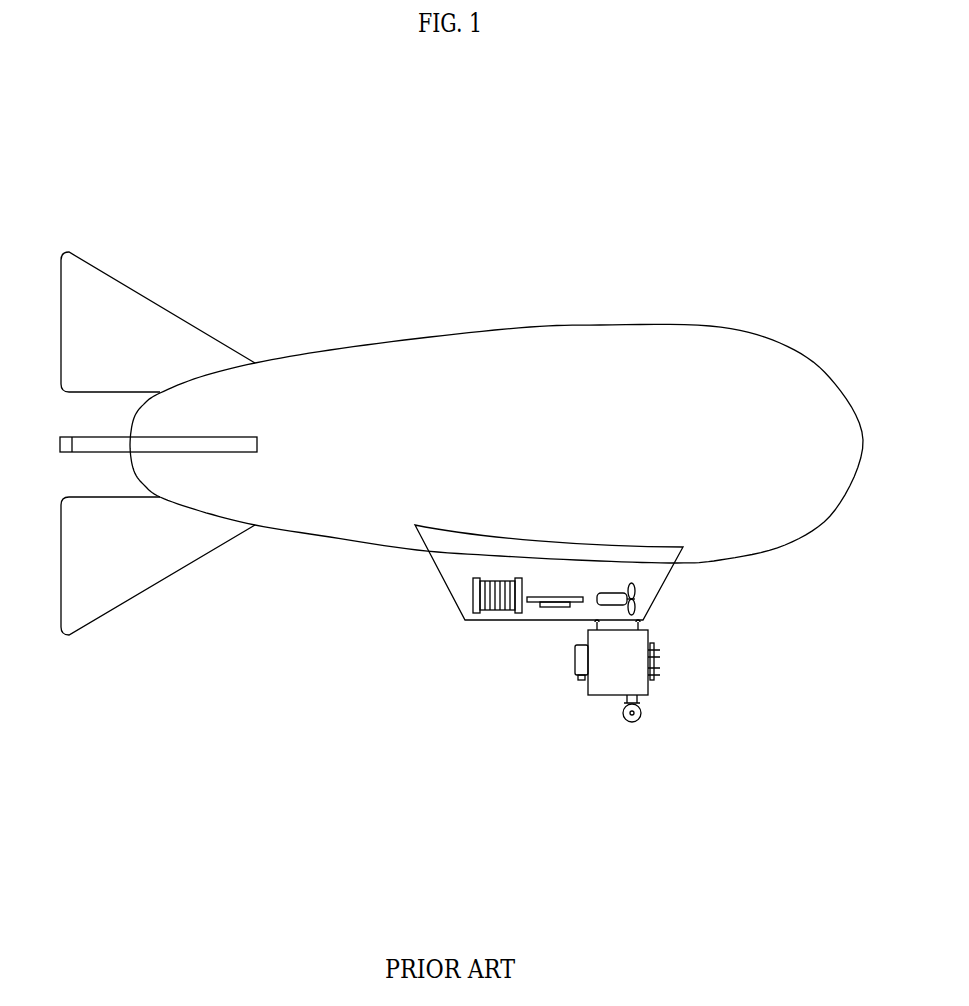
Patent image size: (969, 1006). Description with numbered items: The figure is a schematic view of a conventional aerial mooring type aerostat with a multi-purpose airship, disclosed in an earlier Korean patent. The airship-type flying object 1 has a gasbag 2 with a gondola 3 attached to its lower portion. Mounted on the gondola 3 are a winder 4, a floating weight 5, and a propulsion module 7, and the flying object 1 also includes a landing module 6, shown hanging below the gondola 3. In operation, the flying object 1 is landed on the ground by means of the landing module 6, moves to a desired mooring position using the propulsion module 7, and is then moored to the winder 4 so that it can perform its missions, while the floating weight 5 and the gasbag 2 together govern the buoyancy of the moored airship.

The flying object 1 is at (240, 176).
The gasbag 2 is at (707, 348).
The gondola 3 is at (435, 572).
The winder 4 is at (492, 615).
The floating weight 5 is at (545, 615).
The landing module 6 is at (648, 690).
The propulsion module 7 is at (637, 597).